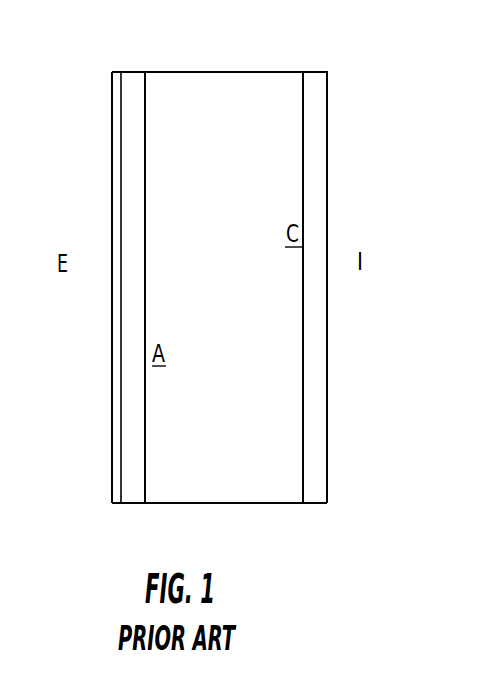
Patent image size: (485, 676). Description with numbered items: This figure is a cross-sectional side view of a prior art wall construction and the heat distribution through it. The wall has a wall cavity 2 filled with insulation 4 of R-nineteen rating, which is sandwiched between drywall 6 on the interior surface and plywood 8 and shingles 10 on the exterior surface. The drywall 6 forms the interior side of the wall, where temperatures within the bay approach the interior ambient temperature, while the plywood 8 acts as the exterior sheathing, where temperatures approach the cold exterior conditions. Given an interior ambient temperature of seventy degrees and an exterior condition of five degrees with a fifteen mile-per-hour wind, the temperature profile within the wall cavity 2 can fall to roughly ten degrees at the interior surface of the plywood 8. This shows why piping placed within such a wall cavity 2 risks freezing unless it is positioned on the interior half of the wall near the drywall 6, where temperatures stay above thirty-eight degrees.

The wall cavity 2 is at (263, 78).
The R-19 insulation 4 is at (227, 494).
The drywall 6 is at (335, 224).
The plywood 8 is at (130, 87).
The shingles 10 is at (106, 140).